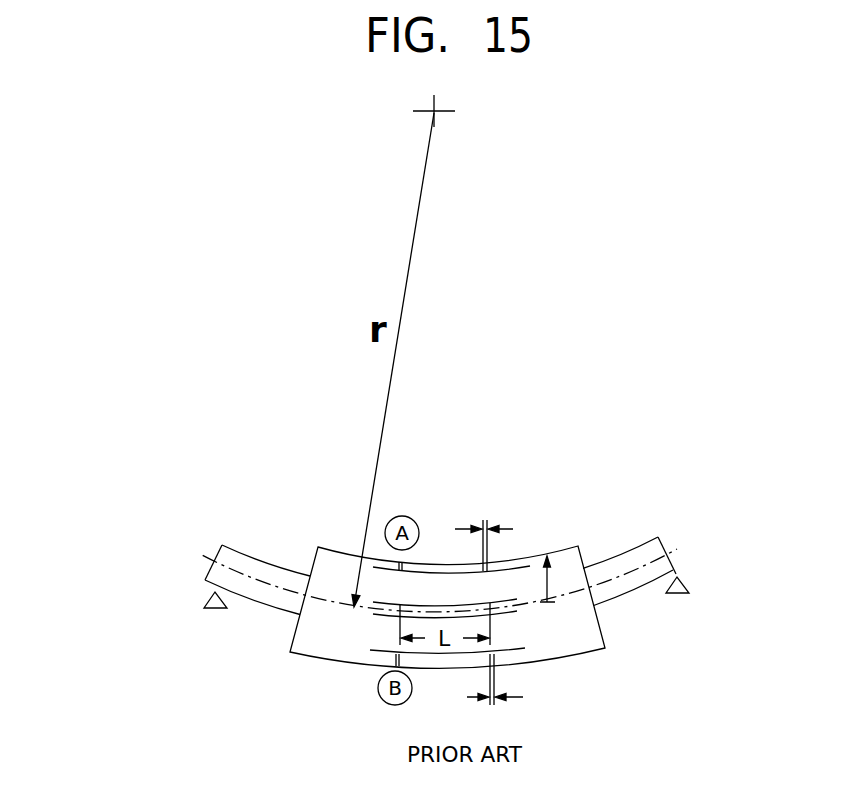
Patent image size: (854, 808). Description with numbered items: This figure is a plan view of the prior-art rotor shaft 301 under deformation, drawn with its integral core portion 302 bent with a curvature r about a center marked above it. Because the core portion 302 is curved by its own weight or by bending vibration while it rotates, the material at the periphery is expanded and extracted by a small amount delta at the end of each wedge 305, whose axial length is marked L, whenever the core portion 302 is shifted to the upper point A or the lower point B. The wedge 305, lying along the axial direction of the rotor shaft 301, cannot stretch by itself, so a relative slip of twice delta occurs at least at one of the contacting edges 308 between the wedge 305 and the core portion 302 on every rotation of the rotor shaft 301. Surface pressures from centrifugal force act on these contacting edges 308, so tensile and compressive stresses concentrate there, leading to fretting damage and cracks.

The rotor shaft 301 is at (229, 561).
The core portion 302 is at (555, 638).
The wedge 305 is at (448, 662).
The contacting edge 308 is at (492, 607).